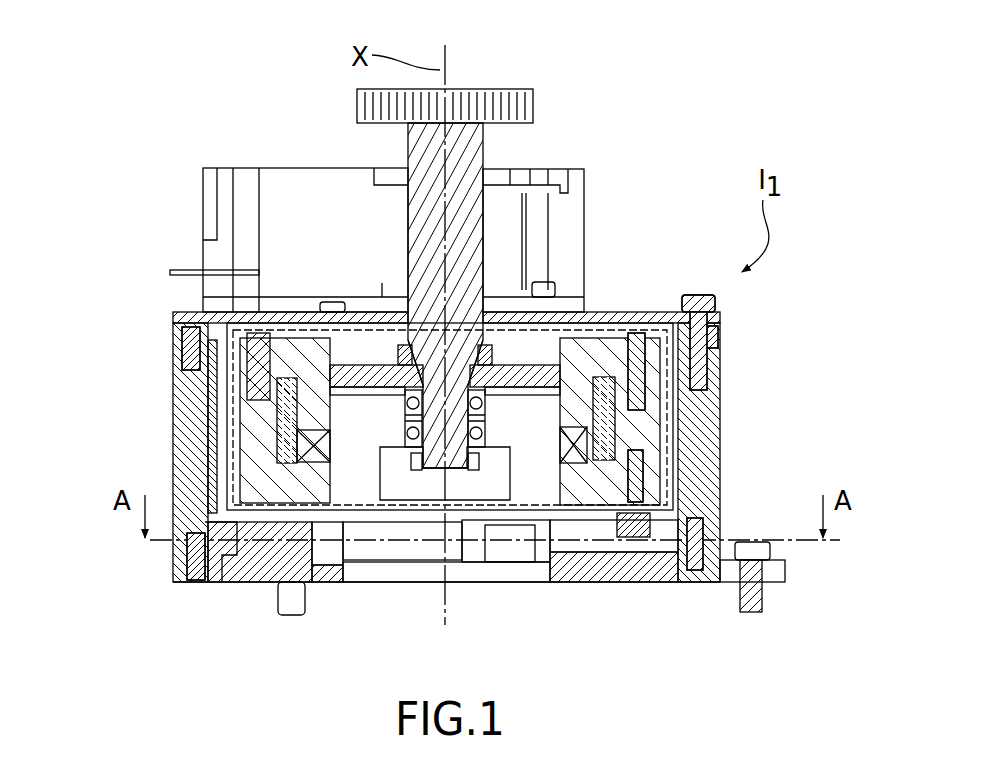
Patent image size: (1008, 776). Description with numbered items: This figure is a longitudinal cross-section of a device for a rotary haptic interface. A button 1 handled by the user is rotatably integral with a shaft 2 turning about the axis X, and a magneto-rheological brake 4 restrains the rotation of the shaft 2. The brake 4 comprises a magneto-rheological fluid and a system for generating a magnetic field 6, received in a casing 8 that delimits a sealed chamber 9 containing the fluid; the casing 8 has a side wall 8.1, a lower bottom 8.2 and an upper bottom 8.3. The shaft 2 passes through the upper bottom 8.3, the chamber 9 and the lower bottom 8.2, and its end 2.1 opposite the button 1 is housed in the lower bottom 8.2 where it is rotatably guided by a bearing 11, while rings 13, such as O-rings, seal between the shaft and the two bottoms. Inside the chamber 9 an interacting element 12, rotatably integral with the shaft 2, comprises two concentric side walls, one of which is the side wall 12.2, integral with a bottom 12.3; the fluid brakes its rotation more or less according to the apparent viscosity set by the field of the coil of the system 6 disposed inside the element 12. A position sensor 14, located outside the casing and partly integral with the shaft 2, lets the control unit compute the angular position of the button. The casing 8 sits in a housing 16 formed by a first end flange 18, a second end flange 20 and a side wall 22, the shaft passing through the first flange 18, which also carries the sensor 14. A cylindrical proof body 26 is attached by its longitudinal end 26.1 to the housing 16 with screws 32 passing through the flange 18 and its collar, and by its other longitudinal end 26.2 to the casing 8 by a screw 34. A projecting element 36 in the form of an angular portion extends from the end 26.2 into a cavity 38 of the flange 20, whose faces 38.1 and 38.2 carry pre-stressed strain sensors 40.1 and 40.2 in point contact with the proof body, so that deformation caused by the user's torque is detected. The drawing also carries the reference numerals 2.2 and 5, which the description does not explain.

The button 1 is at (520, 102).
The shaft 2 is at (465, 243).
The end of the shaft 2.1 is at (265, 330).
The shaft shoulder 2.2 is at (433, 318).
The magneto-rheological brake 4 is at (650, 305).
The housing upper part 5 is at (305, 330).
The system for generating a magnetic field 6 is at (597, 433).
The casing 8 is at (236, 400).
The side wall 8.1 is at (668, 430).
The lower bottom 8.2 is at (610, 560).
The upper bottom 8.3 is at (597, 337).
The sealed chamber 9 is at (712, 355).
The bearing 11 is at (300, 440).
The interacting element 12 is at (648, 388).
The side wall 12.2 is at (358, 330).
The bottom 12.3 is at (312, 335).
The rings 13 is at (480, 396).
The position sensor 14 is at (578, 200).
The housing 16 is at (598, 595).
The first end flange 18 is at (190, 320).
The second end flange 20 is at (262, 555).
The side wall 22 is at (195, 413).
The proof body 26 is at (220, 560).
The longitudinal end 26.1 is at (712, 332).
The longitudinal end 26.2 is at (680, 508).
The screw 32 is at (698, 298).
The screw 34 is at (660, 530).
The projecting element 36 is at (442, 580).
The cavity 38 is at (337, 530).
The face 38.1 is at (318, 592).
The face 38.2 is at (540, 550).
The strain sensor 40.1 is at (318, 550).
The strain sensor 40.2 is at (503, 548).